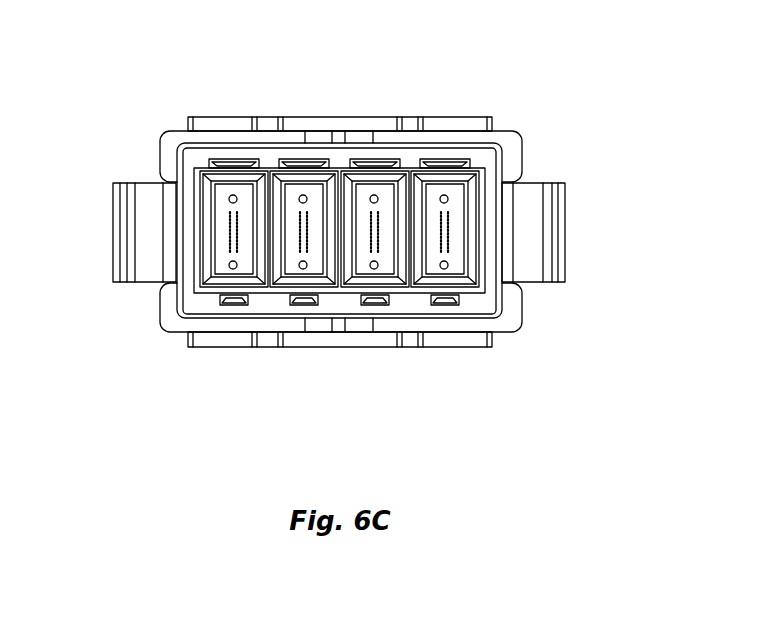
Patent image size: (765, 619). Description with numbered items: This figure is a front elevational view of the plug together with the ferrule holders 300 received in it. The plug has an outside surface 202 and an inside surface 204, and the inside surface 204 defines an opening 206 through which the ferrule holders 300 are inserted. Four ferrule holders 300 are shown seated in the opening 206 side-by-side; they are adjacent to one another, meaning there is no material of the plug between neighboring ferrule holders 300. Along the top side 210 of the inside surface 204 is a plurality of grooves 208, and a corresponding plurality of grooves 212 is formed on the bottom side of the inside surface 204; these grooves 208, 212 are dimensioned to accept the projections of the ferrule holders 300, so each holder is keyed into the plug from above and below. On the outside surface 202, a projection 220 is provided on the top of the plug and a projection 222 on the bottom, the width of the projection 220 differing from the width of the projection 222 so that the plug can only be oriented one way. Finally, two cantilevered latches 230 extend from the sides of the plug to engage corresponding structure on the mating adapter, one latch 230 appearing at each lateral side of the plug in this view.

The outside surface 202 is at (160, 161).
The inside surface 204 is at (196, 300).
The opening 206 is at (480, 187).
The grooves 208 is at (307, 158).
The top side 210 is at (455, 158).
The grooves 212 is at (303, 306).
The projection 220 is at (340, 142).
The projection 222 is at (345, 323).
The cantilevered latches 230 is at (566, 232).
The ferrule holders 300 is at (198, 229).